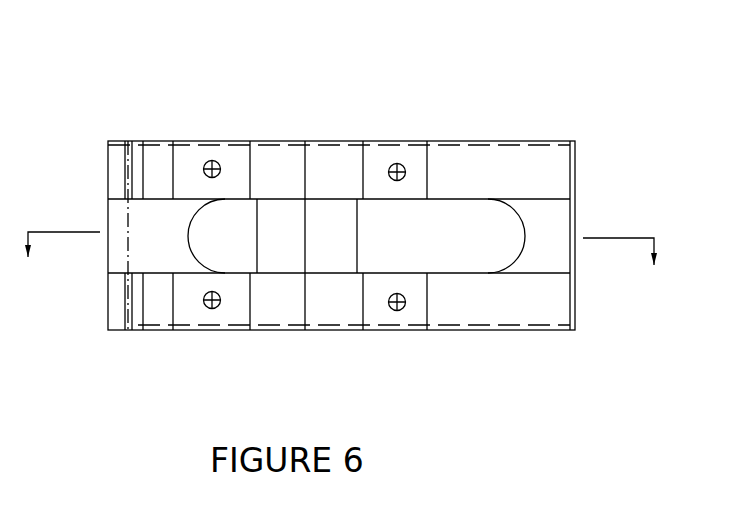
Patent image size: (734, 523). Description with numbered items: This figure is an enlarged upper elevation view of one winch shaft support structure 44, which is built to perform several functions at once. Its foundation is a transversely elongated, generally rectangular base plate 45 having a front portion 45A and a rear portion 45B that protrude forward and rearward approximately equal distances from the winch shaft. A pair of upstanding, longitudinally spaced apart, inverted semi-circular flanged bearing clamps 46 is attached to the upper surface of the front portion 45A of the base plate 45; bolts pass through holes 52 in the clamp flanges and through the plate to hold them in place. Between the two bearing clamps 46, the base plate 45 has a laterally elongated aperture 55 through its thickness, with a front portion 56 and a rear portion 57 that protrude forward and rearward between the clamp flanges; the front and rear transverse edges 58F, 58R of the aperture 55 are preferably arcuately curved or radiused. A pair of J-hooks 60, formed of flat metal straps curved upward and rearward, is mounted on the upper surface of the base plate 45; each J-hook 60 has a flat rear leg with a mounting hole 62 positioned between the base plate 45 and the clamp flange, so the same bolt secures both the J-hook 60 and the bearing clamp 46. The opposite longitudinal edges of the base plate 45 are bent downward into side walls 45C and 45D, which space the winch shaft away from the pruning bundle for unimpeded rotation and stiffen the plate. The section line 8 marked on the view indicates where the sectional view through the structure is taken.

The section line 8- 8 is at (343, 270).
The winch shaft support structure 44 is at (341, 178).
The base plate 45 is at (512, 209).
The front portion of base plate 45A is at (540, 195).
The rear portion of base plate 45B is at (157, 165).
The side wall 45C is at (542, 333).
The side wall 45D is at (460, 142).
The bearing clamp 46 is at (295, 227).
The hole 52 is at (201, 162).
The mounting hole 62 is at (269, 159).
The aperture 55 is at (333, 197).
The front portion of aperture 56 is at (230, 236).
The rear portion of aperture 57 is at (428, 245).
The front transverse edge of aperture 58F is at (185, 237).
The rear transverse edge of aperture 58R is at (520, 260).
The J-hook 60 is at (108, 160).